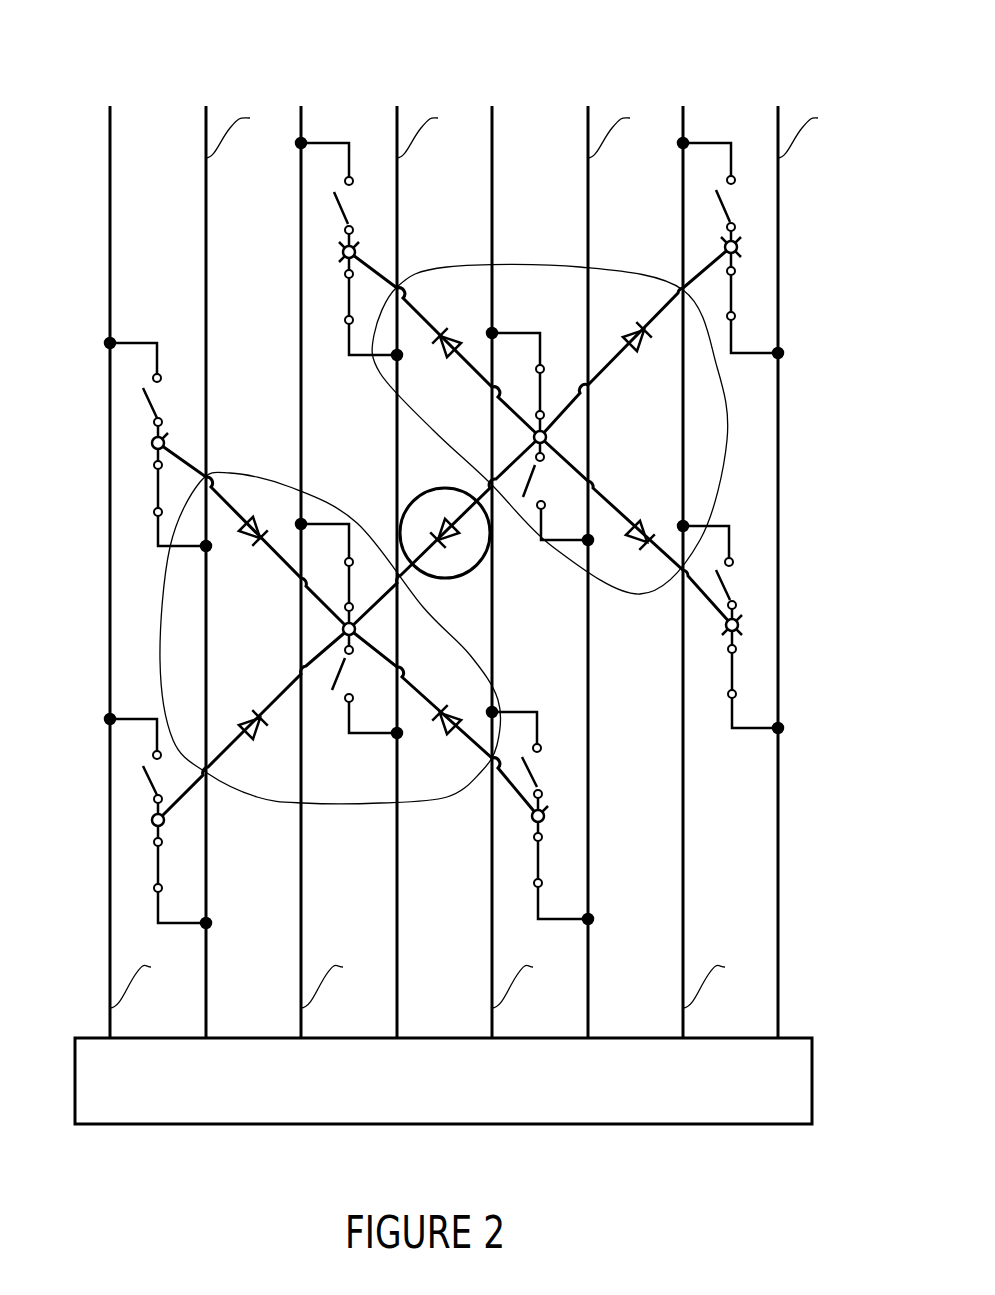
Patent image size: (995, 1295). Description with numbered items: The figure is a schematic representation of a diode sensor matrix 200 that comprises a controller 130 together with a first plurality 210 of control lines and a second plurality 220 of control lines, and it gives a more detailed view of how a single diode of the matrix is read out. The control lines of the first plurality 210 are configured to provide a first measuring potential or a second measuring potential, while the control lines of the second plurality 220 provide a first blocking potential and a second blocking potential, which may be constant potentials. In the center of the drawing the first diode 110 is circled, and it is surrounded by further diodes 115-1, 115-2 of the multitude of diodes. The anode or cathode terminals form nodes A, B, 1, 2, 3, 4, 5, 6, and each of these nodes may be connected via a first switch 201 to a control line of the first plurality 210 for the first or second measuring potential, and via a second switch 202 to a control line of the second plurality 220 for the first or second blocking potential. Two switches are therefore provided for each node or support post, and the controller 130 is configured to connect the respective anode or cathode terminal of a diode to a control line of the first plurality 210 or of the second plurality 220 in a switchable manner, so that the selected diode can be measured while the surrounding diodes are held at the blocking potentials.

The diode sensor matrix 200 is at (88, 24).
The first plurality of control lines 210 is at (99, 886).
The second plurality of control lines 220 is at (786, 203).
The controller 130 is at (788, 1037).
The surrounding diode 115-1 is at (736, 403).
The surrounding diode 115-2 is at (156, 598).
The first diode 110 is at (467, 578).
The first switch 201 is at (551, 393).
The second switch 202 is at (524, 466).
The node 1 is at (155, 443).
The node 2 is at (166, 822).
The node 3 is at (533, 818).
The node 4 is at (724, 627).
The node 5 is at (725, 247).
The node 6 is at (358, 252).
The node A is at (547, 445).
The node B is at (345, 627).